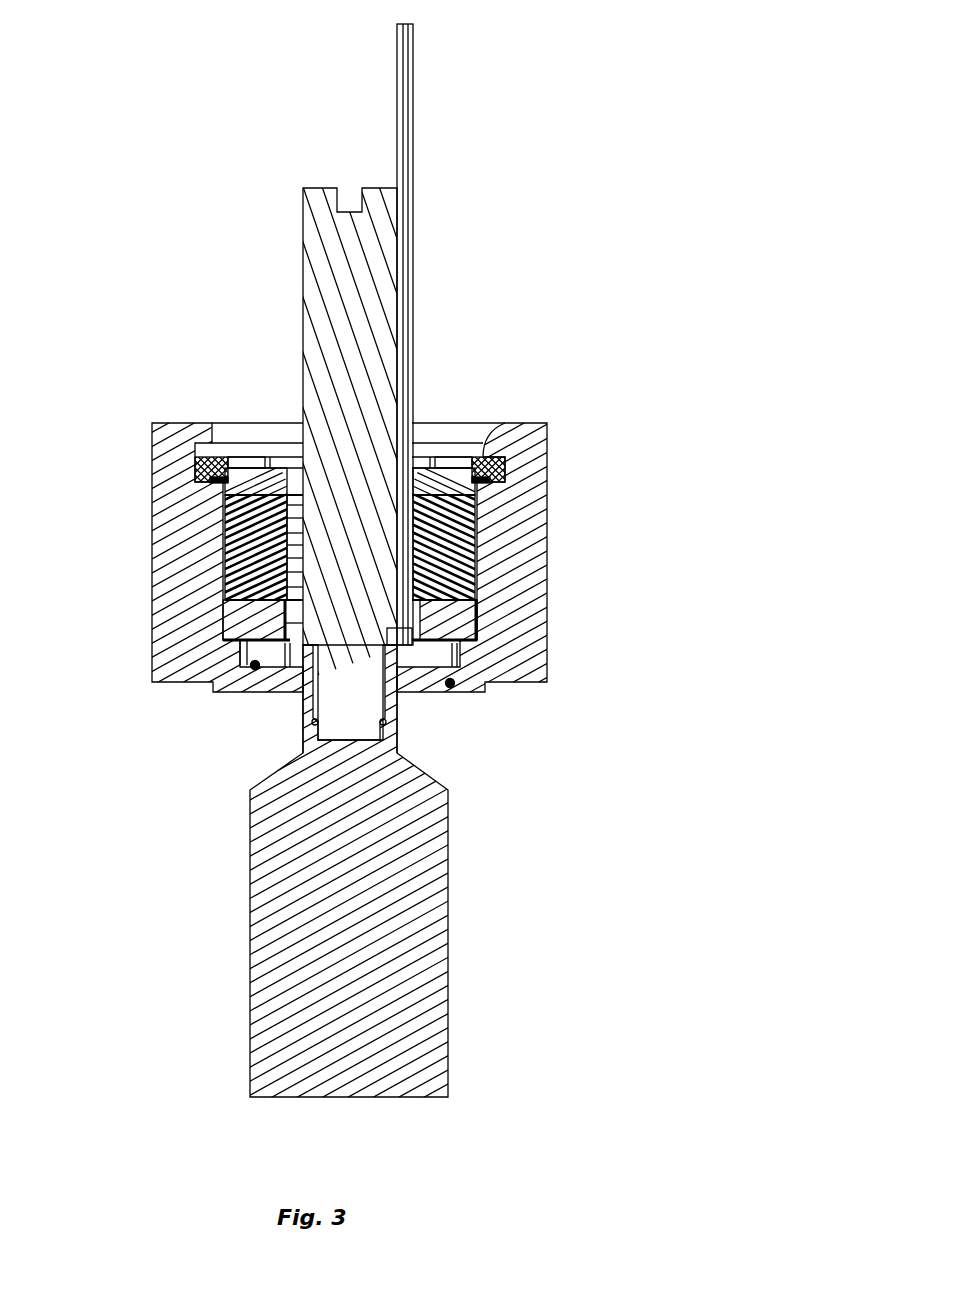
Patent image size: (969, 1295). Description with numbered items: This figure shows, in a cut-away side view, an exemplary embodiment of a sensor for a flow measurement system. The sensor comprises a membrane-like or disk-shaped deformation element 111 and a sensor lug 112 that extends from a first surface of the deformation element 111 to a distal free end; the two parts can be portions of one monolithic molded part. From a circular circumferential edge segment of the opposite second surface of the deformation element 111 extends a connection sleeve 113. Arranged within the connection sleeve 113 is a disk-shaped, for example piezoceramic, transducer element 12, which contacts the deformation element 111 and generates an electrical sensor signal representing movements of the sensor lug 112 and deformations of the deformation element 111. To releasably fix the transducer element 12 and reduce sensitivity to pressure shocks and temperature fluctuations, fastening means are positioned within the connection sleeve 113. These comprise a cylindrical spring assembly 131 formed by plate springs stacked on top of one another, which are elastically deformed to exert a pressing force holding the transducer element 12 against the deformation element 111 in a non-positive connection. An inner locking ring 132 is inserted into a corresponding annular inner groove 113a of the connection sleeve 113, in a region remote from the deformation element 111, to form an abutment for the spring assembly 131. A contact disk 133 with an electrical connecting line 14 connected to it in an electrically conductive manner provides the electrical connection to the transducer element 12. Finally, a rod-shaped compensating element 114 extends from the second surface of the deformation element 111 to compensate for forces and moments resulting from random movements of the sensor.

The electrical connecting line 14 is at (400, 123).
The compensating element 114 is at (328, 292).
The connection sleeve 113 is at (532, 542).
The inner groove 113a is at (495, 465).
The locking ring 132 is at (217, 467).
The spring assembly 131 is at (258, 525).
The contact disk 133 is at (300, 622).
The transducer element 12 is at (438, 658).
The sensor lug 112 is at (414, 871).
The deformation element 111 is at (419, 670).